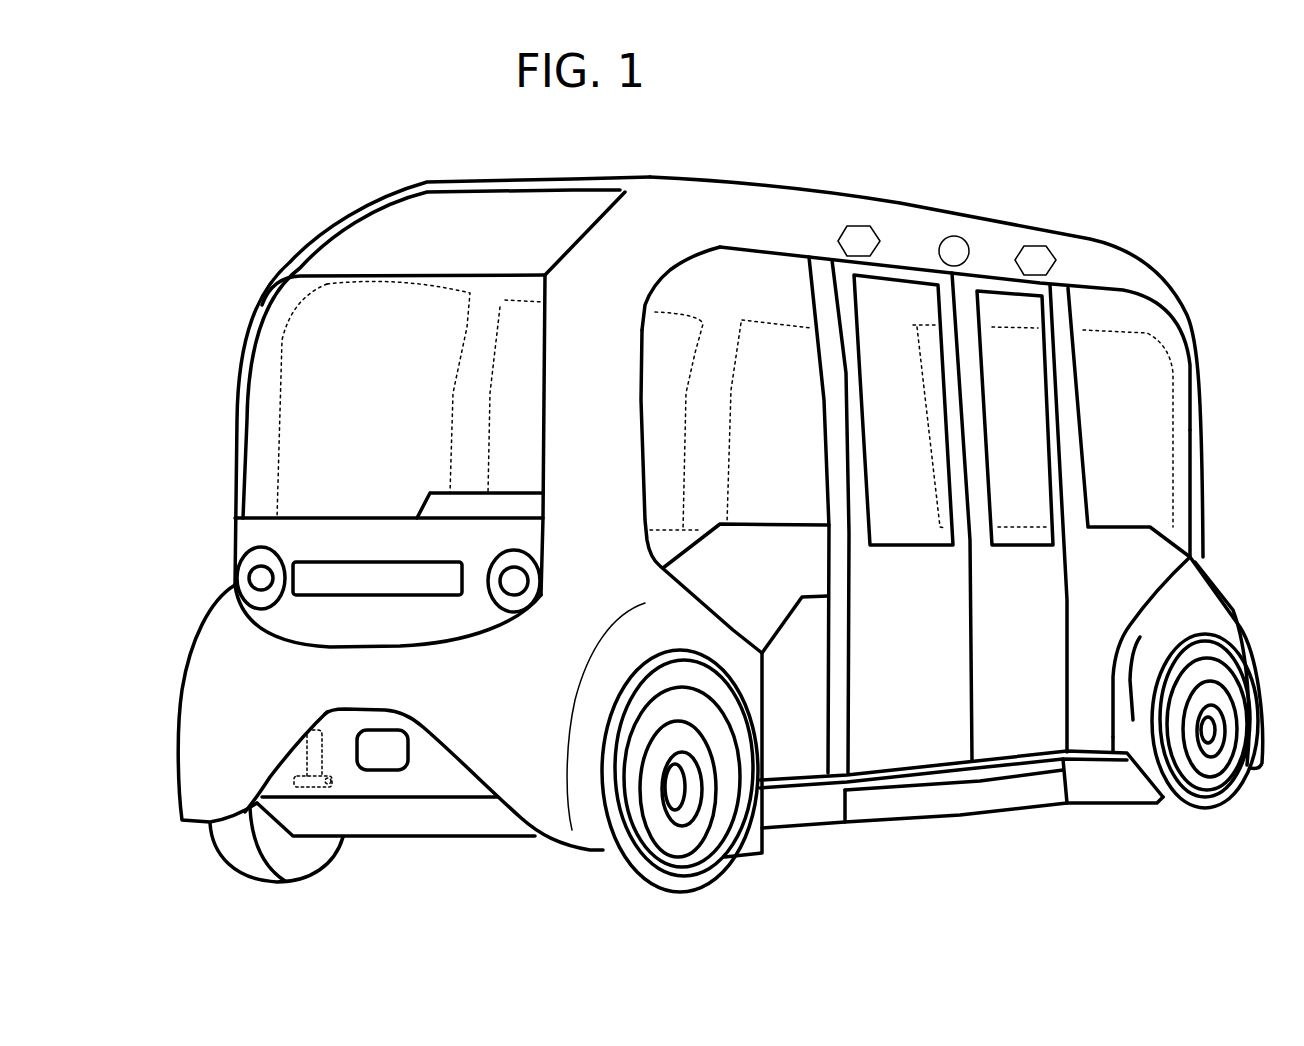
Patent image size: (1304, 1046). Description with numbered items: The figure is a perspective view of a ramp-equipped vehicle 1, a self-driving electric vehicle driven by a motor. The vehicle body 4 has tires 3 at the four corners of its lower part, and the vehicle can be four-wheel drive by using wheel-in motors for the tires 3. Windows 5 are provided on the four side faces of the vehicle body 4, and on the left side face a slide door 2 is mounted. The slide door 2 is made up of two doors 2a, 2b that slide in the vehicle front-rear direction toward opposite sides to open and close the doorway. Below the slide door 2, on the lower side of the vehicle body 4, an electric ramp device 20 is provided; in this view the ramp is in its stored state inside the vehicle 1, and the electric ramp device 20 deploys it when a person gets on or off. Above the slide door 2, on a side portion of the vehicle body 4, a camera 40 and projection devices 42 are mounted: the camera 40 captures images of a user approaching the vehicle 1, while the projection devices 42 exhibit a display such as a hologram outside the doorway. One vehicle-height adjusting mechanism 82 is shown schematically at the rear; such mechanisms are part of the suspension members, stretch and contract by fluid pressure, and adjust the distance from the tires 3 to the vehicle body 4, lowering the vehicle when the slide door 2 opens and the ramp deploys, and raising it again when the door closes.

The vehicle 1 is at (944, 165).
The slide door 2 is at (1073, 562).
The door 2a is at (912, 745).
The door 2b is at (1023, 727).
The tire 3 is at (682, 845).
The vehicle body 4 is at (690, 207).
The window 5 is at (768, 290).
The electric ramp device 20 is at (960, 820).
The camera 40 is at (963, 232).
The projection device 42 is at (859, 224).
The vehicle-height adjusting mechanism 82 is at (290, 752).